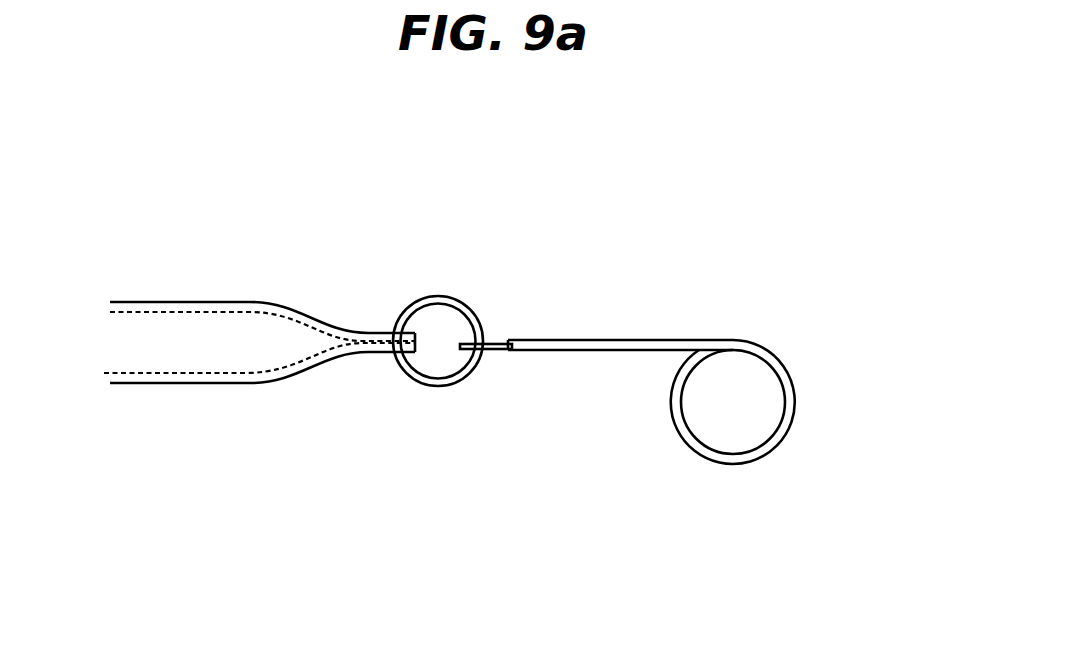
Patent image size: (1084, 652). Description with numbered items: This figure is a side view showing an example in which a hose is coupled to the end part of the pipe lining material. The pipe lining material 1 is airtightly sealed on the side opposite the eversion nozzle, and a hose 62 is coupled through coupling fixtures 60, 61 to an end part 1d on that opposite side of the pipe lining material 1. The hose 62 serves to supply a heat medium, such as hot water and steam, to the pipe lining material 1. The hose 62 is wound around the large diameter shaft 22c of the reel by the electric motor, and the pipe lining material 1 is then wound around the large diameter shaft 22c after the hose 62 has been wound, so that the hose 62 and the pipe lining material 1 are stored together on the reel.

The pipe lining material 1 is at (142, 302).
The end part 1d is at (368, 333).
The coupling fixture 60 is at (432, 296).
The coupling fixture 61 is at (485, 340).
The hose 62 is at (572, 340).
The large diameter shaft 22c is at (765, 394).